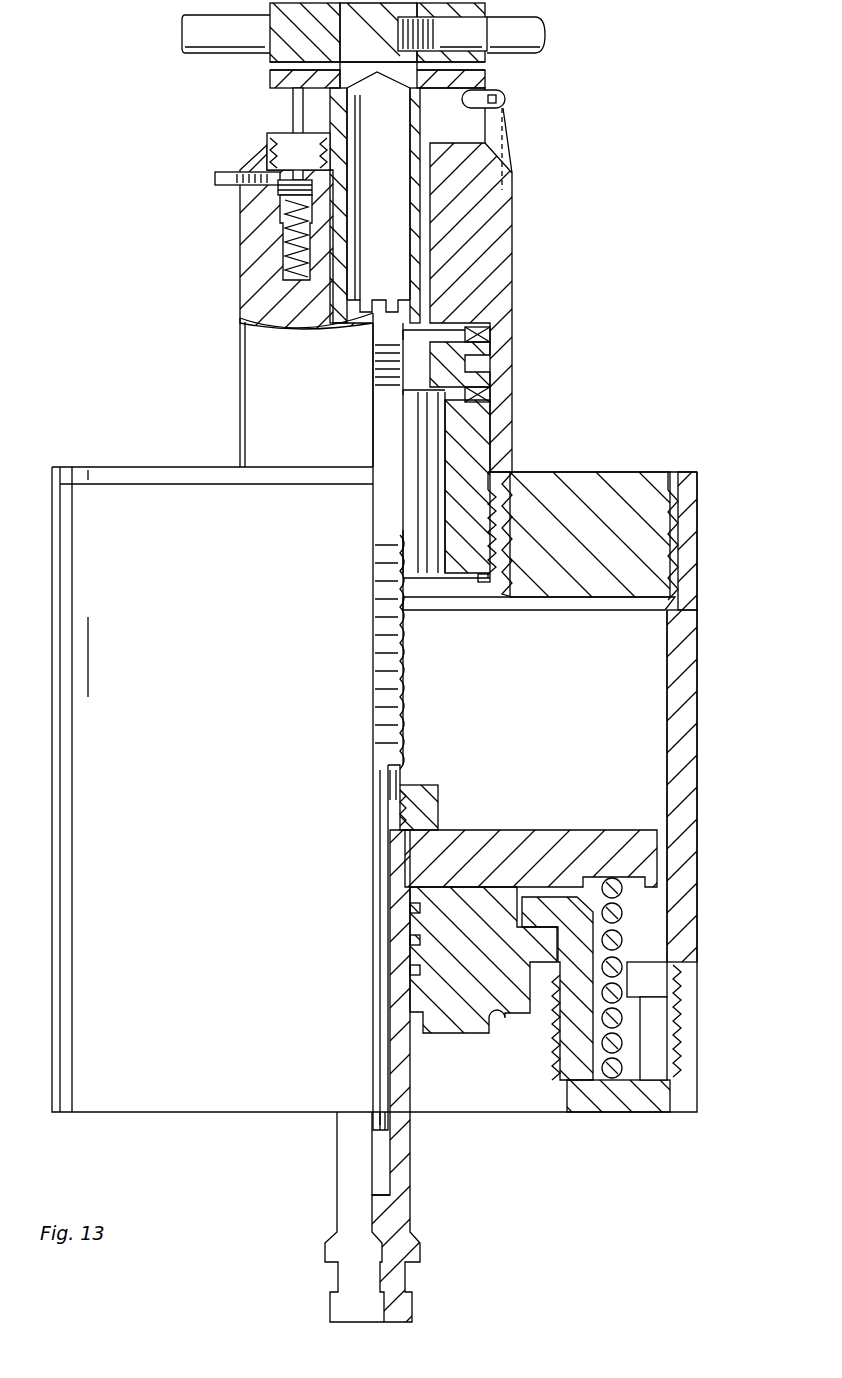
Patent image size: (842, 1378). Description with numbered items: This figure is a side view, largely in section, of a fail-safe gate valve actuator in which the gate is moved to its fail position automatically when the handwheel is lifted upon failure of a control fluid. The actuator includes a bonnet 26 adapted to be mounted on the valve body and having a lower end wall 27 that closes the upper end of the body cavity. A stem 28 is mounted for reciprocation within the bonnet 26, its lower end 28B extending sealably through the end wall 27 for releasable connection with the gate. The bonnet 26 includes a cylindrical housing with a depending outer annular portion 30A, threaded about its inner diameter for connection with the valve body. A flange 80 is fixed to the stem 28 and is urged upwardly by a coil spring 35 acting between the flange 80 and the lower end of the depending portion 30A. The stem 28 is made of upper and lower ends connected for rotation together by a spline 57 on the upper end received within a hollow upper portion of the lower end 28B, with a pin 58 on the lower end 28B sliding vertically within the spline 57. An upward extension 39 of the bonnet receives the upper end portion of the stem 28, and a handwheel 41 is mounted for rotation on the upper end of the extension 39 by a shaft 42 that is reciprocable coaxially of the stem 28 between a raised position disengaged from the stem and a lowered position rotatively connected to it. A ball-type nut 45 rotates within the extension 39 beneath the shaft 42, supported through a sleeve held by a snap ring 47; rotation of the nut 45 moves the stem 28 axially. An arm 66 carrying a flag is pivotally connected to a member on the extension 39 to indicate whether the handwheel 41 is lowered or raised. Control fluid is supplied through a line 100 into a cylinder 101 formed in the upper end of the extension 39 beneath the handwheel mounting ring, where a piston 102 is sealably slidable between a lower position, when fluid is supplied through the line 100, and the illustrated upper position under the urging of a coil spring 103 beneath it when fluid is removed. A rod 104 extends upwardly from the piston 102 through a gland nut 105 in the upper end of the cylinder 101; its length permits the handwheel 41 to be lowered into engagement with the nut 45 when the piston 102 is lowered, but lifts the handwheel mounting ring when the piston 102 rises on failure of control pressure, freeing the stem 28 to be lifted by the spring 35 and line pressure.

The bonnet 26 is at (698, 682).
The lower end wall 27 is at (462, 1035).
The stem 28 is at (405, 690).
The lower end of stem 28B is at (337, 1158).
The depending outer annular portion 30A is at (650, 1113).
The coil spring 35 is at (627, 920).
The upward extension of the bonnet 39 is at (514, 262).
The handwheel 41 is at (545, 45).
The shaft 42 is at (420, 127).
The nut 45 is at (487, 348).
The snap ring 47 is at (375, 307).
The spline 57 is at (470, 360).
The pin 58 is at (382, 818).
The arm 66 is at (500, 143).
The flange 80 is at (515, 829).
The line 100 is at (215, 174).
The cylinder 101 is at (285, 210).
The piston 102 is at (290, 190).
The coil spring 103 is at (290, 250).
The rod 104 is at (293, 95).
The gland nut 105 is at (270, 155).